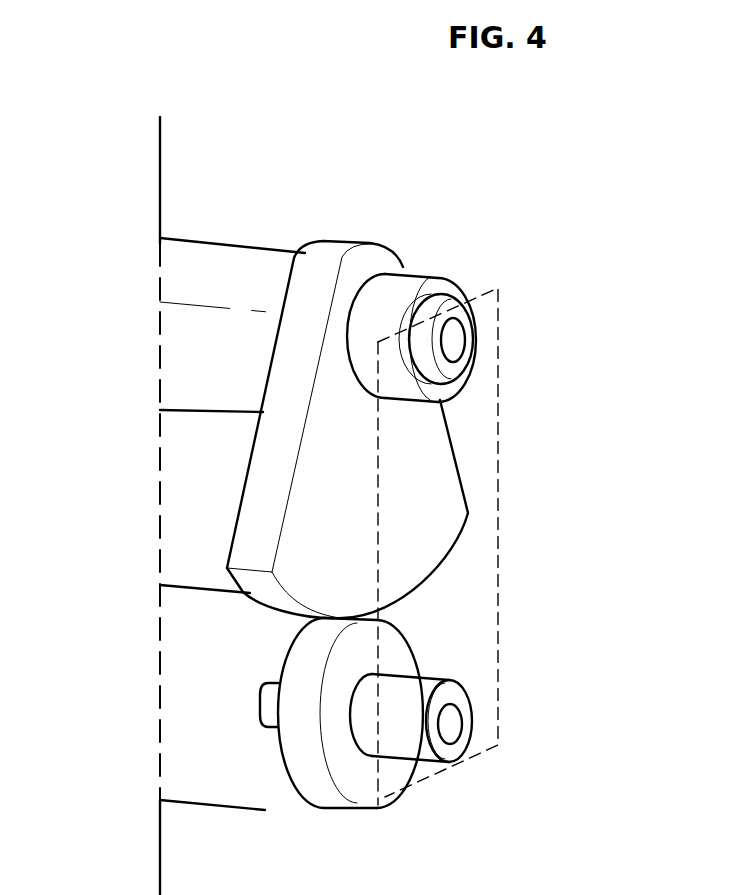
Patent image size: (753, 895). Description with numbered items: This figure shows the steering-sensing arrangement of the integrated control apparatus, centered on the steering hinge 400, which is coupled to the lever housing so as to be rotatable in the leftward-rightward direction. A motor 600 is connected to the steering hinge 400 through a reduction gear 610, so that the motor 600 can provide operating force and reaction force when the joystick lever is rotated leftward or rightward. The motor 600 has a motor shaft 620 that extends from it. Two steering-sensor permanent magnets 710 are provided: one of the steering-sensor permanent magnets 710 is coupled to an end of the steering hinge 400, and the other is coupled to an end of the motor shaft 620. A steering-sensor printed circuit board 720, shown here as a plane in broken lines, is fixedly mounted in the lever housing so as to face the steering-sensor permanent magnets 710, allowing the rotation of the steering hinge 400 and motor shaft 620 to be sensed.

The steering hinge 400 is at (190, 358).
The motor 600 is at (190, 703).
The reduction gear 610 is at (393, 657).
The motor shaft 620 is at (396, 743).
The steering-sensor permanent magnets 710 is at (450, 343).
The steering-sensor printed circuit board 720 is at (498, 465).